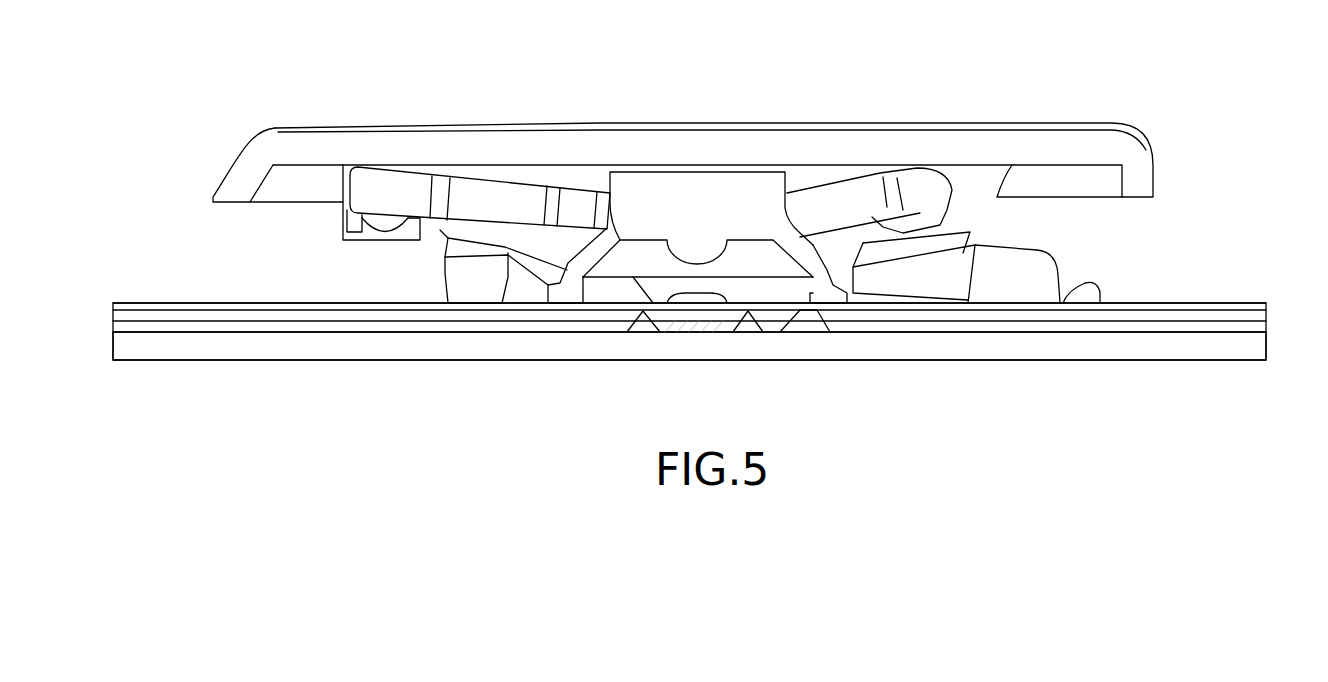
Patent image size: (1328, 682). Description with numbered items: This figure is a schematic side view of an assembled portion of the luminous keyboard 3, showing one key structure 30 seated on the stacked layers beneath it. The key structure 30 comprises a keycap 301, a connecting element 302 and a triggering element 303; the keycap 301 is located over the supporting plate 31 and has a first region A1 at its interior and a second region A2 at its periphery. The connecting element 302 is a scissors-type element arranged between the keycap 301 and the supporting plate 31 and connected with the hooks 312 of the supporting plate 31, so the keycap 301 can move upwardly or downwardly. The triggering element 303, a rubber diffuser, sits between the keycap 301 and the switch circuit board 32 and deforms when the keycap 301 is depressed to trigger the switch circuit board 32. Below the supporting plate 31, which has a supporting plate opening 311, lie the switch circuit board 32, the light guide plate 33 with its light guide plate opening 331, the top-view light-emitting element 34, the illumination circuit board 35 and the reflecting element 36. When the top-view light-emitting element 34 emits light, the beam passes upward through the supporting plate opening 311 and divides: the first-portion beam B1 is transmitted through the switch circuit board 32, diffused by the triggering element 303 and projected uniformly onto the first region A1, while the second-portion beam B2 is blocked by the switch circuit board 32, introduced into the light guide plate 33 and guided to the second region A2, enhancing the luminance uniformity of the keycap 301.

The luminous keyboard 3 is at (201, 64).
The key structure 30 is at (1245, 122).
The keycap 301 is at (1100, 136).
The connecting element 302 is at (1026, 265).
The triggering element 303 is at (725, 195).
The supporting plate 31 is at (1238, 314).
The supporting plate opening 311 is at (790, 313).
The hook 312 is at (1090, 293).
The switch circuit board 32 is at (1178, 303).
The light guide plate 33 is at (1113, 325).
The light guide plate opening 331 is at (747, 323).
The top-view light-emitting element 34 is at (685, 325).
The illumination circuit board 35 is at (1050, 345).
The reflecting element 36 is at (1197, 333).
The first region A1 is at (516, 117).
The second region A2 is at (373, 117).
The first-portion beam B1 is at (510, 165).
The second-portion beam B2 is at (557, 335).